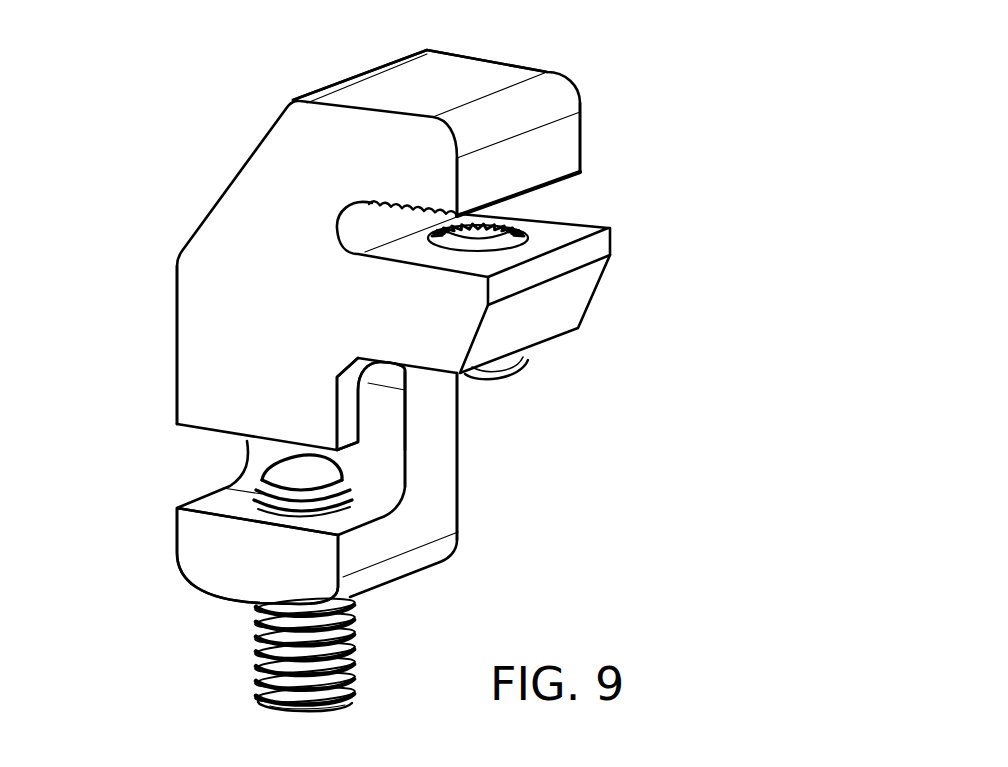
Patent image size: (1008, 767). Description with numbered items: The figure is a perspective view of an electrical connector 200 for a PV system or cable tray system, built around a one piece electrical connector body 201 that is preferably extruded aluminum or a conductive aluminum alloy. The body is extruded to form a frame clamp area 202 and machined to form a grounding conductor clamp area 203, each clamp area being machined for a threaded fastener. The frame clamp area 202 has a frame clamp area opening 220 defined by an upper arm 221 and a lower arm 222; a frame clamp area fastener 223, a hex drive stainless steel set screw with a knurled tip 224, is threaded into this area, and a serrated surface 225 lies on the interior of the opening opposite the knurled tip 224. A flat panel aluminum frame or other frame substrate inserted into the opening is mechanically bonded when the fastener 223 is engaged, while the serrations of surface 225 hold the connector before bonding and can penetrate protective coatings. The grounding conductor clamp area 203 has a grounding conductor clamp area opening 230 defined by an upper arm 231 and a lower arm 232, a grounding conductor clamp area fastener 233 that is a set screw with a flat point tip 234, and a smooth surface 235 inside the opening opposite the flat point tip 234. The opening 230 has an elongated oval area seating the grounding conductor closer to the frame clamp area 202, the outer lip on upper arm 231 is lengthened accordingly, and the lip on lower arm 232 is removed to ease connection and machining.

The electrical connector 200 is at (243, 123).
The electrical connector body 201 is at (483, 85).
The frame clamp area 202 is at (235, 267).
The grounding conductor clamp area 203 is at (433, 472).
The frame clamp area opening 220 is at (545, 198).
The upper arm 221 is at (540, 150).
The lower arm 222 is at (550, 268).
The frame clamp area fastener 223 is at (517, 374).
The knurled tip 224 is at (522, 224).
The serrated surface 225 is at (372, 200).
The grounding conductor clamp area opening 230 is at (200, 463).
The upper arm 231 is at (220, 360).
The lower arm 232 is at (240, 553).
The grounding conductor clamp area fastener 233 is at (267, 707).
The flat point tip 234 is at (345, 483).
The smooth surface 235 is at (388, 398).